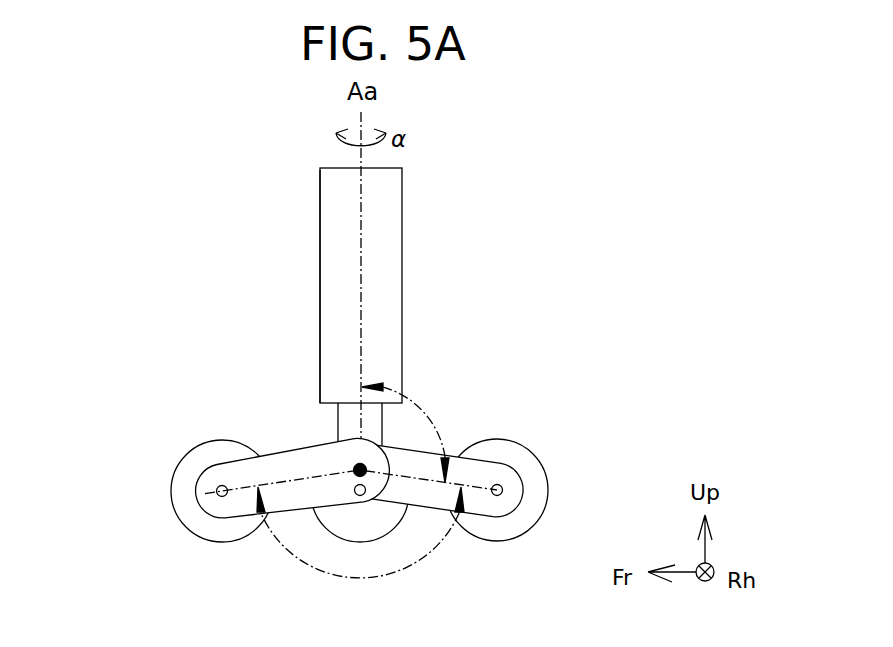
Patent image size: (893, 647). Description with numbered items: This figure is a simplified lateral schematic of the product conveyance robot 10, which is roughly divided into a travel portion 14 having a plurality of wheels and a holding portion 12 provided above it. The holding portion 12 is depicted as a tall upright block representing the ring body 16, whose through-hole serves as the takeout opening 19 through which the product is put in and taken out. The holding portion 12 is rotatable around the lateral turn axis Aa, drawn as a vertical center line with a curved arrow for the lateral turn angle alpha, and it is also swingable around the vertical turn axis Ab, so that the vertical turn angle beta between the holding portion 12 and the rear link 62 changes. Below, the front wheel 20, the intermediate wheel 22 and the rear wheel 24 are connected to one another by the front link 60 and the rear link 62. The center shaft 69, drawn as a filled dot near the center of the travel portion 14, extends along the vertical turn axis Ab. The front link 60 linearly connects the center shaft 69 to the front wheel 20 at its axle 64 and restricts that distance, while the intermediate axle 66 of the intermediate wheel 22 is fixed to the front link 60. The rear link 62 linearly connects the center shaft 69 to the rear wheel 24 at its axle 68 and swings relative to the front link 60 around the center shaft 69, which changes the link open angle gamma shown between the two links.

The product conveyance robot 10 is at (167, 182).
The holding portion 12 is at (420, 309).
The travel portion 14 is at (173, 432).
The ring body 16 is at (402, 209).
The takeout opening 19 is at (320, 262).
The front wheel 20 is at (222, 440).
The intermediate wheel 22 is at (333, 535).
The rear wheel 24 is at (523, 446).
The front link 60 is at (273, 455).
The rear link 62 is at (452, 452).
The first pivot shaft 64 is at (220, 496).
The intermediate axle 66 is at (362, 496).
The third pivot shaft 68 is at (502, 496).
The center shaft 69 is at (357, 465).